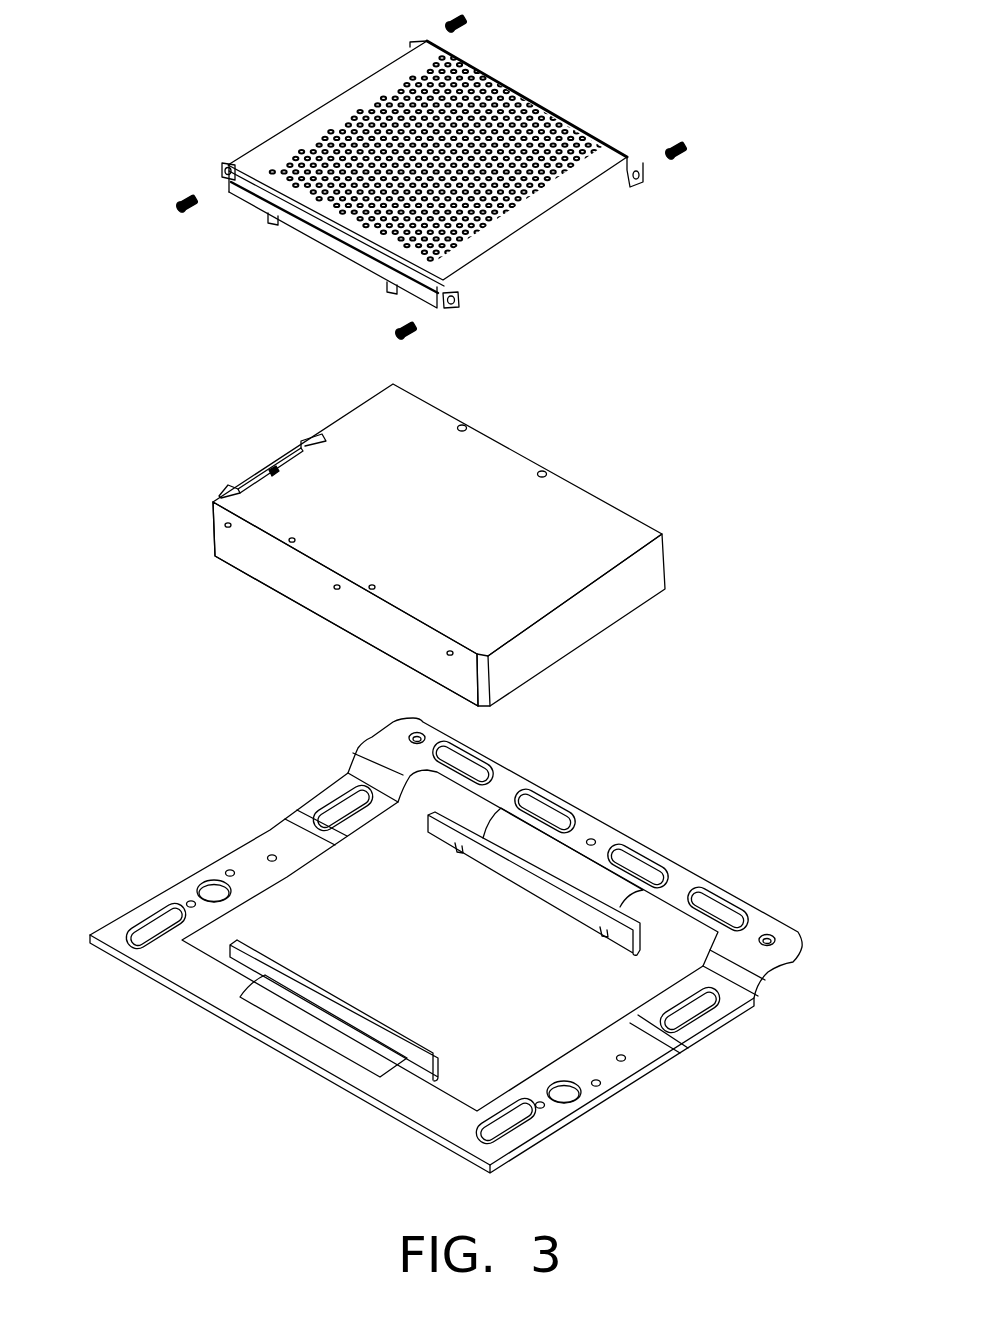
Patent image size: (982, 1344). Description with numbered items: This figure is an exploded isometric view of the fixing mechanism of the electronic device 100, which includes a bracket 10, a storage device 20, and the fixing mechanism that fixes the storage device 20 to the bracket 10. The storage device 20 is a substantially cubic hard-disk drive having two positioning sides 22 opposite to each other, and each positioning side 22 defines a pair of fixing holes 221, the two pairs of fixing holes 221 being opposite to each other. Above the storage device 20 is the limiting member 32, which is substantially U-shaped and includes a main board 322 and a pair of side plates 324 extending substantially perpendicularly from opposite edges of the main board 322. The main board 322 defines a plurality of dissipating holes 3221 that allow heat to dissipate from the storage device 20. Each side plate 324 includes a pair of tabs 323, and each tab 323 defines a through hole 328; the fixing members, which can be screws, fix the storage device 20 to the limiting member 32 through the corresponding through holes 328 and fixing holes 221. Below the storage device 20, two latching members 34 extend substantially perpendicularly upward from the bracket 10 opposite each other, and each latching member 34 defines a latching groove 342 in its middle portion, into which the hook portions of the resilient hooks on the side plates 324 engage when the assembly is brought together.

The electronic device 100 is at (276, 64).
The bracket 10 is at (751, 938).
The storage device 20 is at (591, 524).
The positioning side 22 is at (292, 573).
The fixing hole 221 is at (226, 523).
The limiting member 32 is at (558, 96).
The main board 322 is at (580, 177).
The dissipating hole 3221 is at (517, 208).
The tab 323 is at (453, 309).
The side plate 324 is at (228, 172).
The through hole 328 is at (456, 300).
The latching member 34 is at (250, 965).
The latching groove 342 is at (320, 1018).